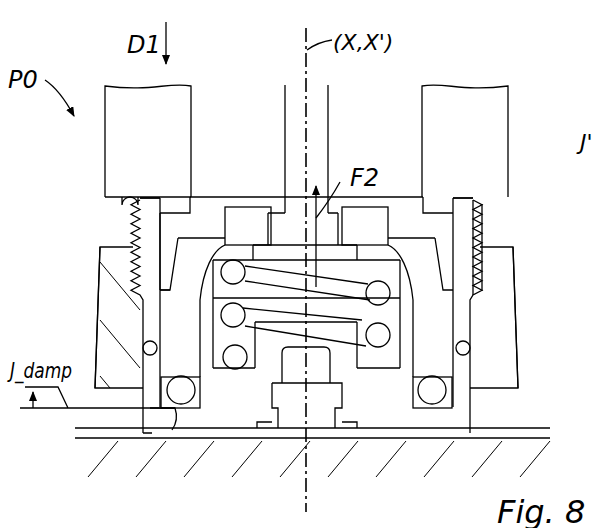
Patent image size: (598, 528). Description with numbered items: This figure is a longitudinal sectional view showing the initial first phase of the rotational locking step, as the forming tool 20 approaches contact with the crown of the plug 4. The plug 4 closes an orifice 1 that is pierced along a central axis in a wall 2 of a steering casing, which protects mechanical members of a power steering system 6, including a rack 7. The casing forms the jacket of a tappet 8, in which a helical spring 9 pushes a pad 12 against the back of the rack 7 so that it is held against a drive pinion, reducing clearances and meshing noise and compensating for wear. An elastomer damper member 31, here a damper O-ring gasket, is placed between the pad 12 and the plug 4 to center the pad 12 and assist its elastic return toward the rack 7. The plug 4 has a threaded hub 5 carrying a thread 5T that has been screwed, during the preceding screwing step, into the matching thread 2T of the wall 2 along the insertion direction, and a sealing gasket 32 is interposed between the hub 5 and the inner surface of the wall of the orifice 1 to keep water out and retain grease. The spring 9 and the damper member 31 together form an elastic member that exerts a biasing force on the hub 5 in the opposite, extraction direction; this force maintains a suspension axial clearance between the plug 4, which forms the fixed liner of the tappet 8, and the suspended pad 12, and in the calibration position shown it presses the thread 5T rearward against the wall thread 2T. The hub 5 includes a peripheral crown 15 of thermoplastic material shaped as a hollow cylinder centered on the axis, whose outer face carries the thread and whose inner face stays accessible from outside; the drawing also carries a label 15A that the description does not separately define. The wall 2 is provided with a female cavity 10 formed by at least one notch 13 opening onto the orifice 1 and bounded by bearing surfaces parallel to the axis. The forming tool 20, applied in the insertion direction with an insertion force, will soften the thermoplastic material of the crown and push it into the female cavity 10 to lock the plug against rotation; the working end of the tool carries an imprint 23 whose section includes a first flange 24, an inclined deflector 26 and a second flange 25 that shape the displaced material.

The orifice 1 is at (482, 258).
The wall 2 is at (497, 283).
The matching thread 2T is at (484, 292).
The plug 4 is at (148, 307).
The threaded hub 5 is at (148, 245).
The thread 5T is at (480, 230).
The power steering system 6 is at (76, 336).
The rack 7 is at (487, 438).
The tappet 8 is at (413, 412).
The spring 9 is at (262, 275).
The female cavity 10 is at (116, 240).
The notch 13 is at (86, 255).
The pad 12 is at (163, 420).
The peripheral crown 15 is at (130, 197).
The striker face 15A is at (463, 190).
The forming tool 20 is at (192, 96).
The imprint 23 is at (484, 198).
The first flange 24 is at (148, 205).
The second flange 25 is at (160, 200).
The inclined deflector 26 is at (122, 205).
The elastomer damper member 31 is at (440, 390).
The sealing gasket 32 is at (462, 343).